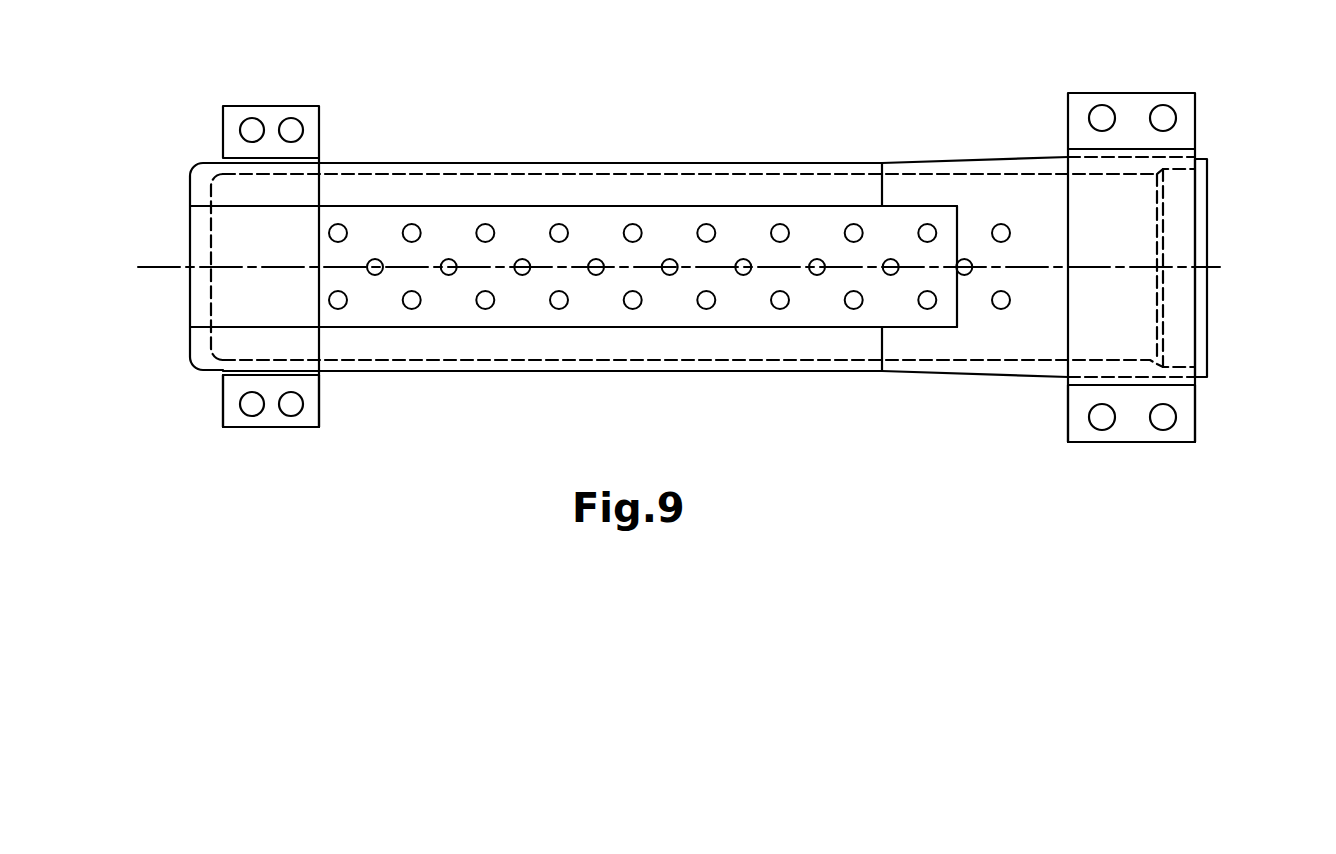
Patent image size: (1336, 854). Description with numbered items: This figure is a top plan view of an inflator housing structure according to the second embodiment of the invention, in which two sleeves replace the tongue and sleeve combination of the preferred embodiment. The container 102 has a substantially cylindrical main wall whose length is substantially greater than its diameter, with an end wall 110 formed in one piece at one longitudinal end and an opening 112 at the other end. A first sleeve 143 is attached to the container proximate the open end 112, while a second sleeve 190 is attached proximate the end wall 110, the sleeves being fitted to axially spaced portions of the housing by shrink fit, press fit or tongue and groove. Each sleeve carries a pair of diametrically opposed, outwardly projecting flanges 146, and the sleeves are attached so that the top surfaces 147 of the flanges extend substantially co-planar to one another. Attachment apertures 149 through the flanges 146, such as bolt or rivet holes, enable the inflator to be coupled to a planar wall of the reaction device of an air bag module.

The container 102 is at (437, 163).
The end wall 110 is at (190, 233).
The opening 112 is at (1228, 215).
The sleeve 190 is at (329, 99).
The sleeve 143 is at (1116, 83).
The top surface 147 is at (308, 415).
The flange 146 is at (263, 427).
The attachment aperture 149 is at (285, 403).